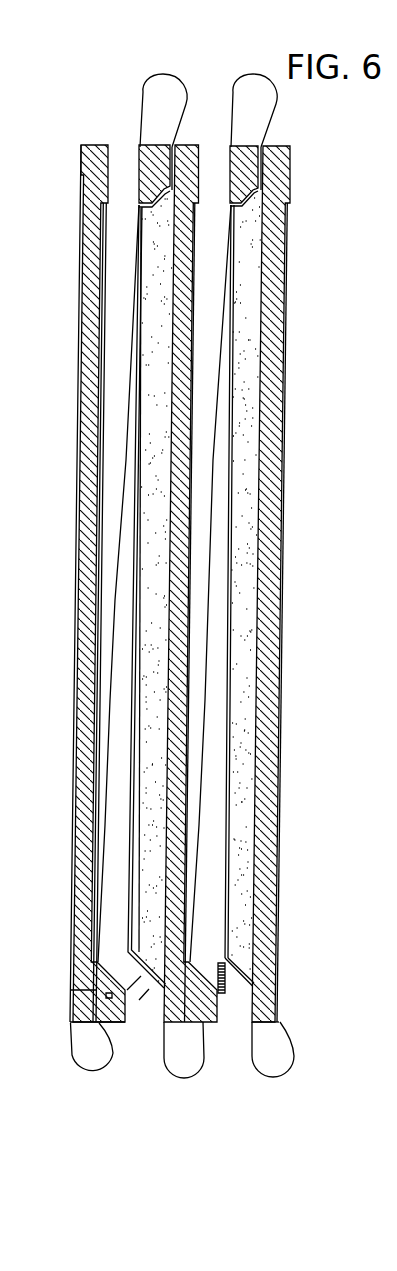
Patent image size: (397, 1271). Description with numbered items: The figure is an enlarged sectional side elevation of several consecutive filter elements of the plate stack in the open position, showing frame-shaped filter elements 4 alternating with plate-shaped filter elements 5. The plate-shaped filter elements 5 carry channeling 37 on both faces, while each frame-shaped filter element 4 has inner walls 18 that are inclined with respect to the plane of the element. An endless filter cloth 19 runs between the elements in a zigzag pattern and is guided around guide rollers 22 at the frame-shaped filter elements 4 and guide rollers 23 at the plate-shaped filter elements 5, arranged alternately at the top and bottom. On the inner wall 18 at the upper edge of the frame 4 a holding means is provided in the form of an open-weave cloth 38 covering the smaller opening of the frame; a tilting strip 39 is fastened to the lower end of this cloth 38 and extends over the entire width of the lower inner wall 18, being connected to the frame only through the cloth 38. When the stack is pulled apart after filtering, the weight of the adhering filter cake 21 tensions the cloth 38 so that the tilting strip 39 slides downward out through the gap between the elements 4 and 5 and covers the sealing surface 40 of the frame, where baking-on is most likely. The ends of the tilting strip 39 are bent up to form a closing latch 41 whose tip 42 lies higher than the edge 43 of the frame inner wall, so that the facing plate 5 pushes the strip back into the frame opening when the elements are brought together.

The frame-shaped filter element 4 is at (200, 1022).
The plate-shaped filter element 5 is at (268, 745).
The inner wall 18 is at (255, 196).
The filter cloth 19 is at (273, 117).
The filter cake 21 is at (240, 829).
The guide roller 22 is at (252, 88).
The guide roller 23 is at (287, 1063).
The channeling 37 is at (281, 462).
The open-weave cloth 38 is at (226, 298).
The tilting strip 39 is at (240, 987).
The sealing surface 40 is at (220, 1017).
The closing latch 41 is at (140, 957).
The tip 42 is at (148, 993).
The edge 43 is at (110, 995).